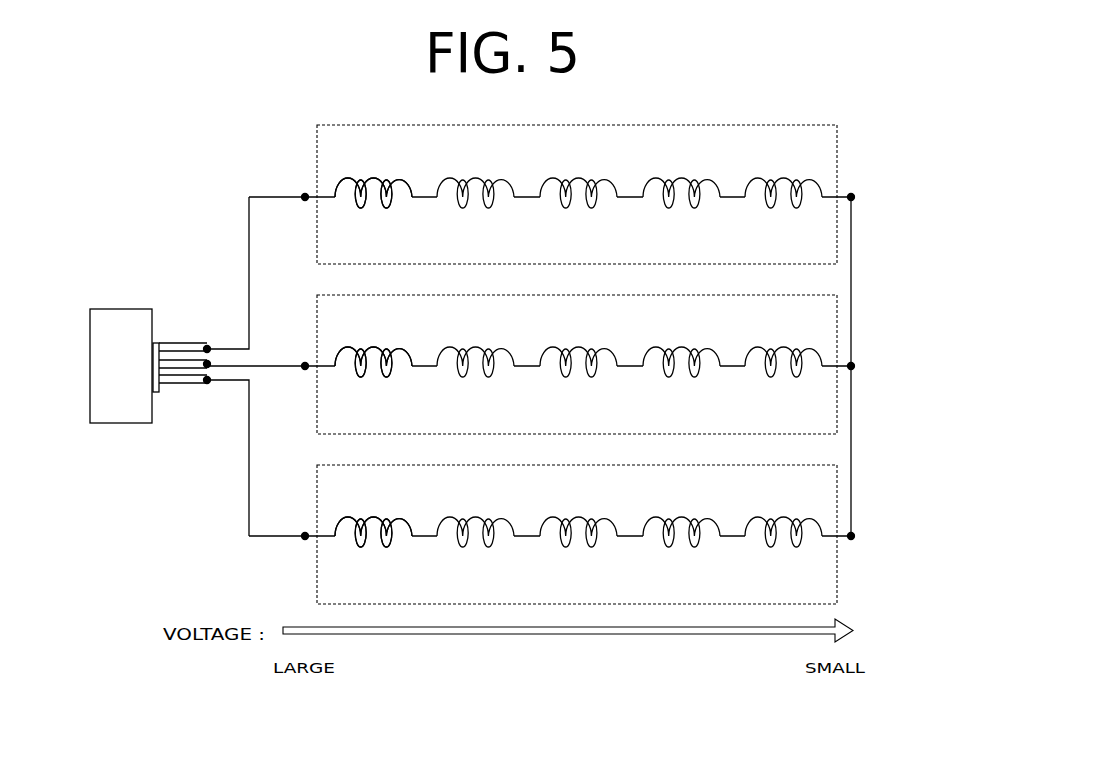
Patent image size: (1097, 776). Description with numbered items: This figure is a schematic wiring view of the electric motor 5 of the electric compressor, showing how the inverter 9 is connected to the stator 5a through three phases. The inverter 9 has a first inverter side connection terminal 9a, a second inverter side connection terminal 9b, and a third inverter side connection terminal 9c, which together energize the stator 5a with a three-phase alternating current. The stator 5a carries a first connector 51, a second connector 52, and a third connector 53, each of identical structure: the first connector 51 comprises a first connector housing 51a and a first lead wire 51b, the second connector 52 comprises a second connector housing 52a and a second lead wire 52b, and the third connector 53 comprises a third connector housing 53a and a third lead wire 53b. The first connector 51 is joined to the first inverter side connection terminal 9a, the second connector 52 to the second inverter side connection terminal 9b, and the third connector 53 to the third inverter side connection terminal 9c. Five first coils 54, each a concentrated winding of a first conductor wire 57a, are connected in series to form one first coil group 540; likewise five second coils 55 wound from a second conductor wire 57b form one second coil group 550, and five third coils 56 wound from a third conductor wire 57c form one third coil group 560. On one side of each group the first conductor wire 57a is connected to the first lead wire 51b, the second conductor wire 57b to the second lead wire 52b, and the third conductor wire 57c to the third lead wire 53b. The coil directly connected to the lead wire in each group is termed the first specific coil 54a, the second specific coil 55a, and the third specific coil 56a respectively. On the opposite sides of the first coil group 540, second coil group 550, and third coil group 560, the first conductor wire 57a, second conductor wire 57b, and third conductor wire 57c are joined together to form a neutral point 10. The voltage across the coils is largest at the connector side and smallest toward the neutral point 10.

The electric motor 5 is at (574, 385).
The stator 5a is at (855, 561).
The inverter 9 is at (117, 303).
The first inverter side connection terminal 9a is at (153, 348).
The second inverter side connection terminal 9b is at (153, 365).
The third inverter side connection terminal 9c is at (153, 382).
The neutral point 10 is at (852, 364).
The first connector 51 is at (249, 263).
The first connector housing 51a is at (164, 344).
The first lead wire 51b is at (249, 206).
The second connector 52 is at (239, 430).
The second connector housing 52a is at (176, 370).
The second lead wire 52b is at (245, 368).
The third connector 53 is at (249, 472).
The third connector housing 53a is at (188, 385).
The third lead wire 53b is at (248, 515).
The first coils 54 is at (475, 213).
The first specific coil 54a is at (349, 213).
The second coils 55 is at (475, 383).
The second specific coil 55a is at (349, 383).
The third coils 56 is at (475, 553).
The third specific coil 56a is at (349, 553).
The first conductor wire 57a is at (333, 195).
The second conductor wire 57b is at (333, 364).
The third conductor wire 57c is at (333, 534).
The first coil group 540 is at (317, 150).
The second coil group 550 is at (317, 304).
The third coil group 560 is at (317, 588).